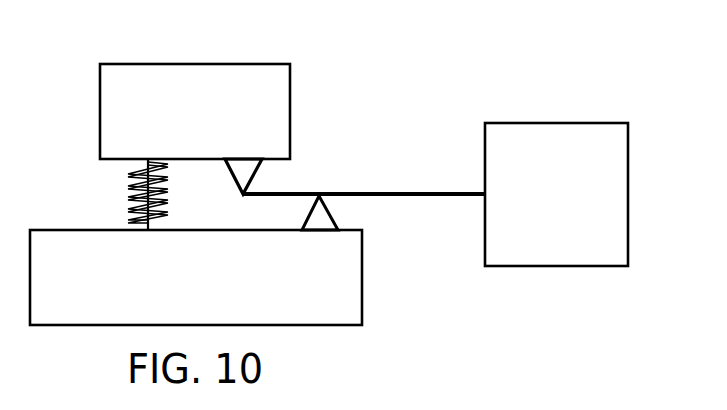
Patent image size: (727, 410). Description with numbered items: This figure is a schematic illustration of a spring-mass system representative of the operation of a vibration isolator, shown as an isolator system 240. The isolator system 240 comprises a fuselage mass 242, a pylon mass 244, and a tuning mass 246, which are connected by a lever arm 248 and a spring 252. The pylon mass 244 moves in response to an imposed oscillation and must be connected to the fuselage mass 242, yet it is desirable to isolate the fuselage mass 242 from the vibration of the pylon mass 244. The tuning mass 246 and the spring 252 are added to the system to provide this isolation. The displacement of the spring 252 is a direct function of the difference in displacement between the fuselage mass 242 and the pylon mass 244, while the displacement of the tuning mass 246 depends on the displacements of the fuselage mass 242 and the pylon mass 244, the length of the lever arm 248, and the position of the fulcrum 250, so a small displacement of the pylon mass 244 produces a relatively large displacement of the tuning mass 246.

The isolator system 240 is at (426, 56).
The fuselage mass 242 is at (218, 294).
The pylon mass 244 is at (218, 128).
The tuning mass 246 is at (578, 211).
The lever arm 248 is at (397, 192).
The fulcrum 250 is at (330, 209).
The spring 252 is at (128, 193).